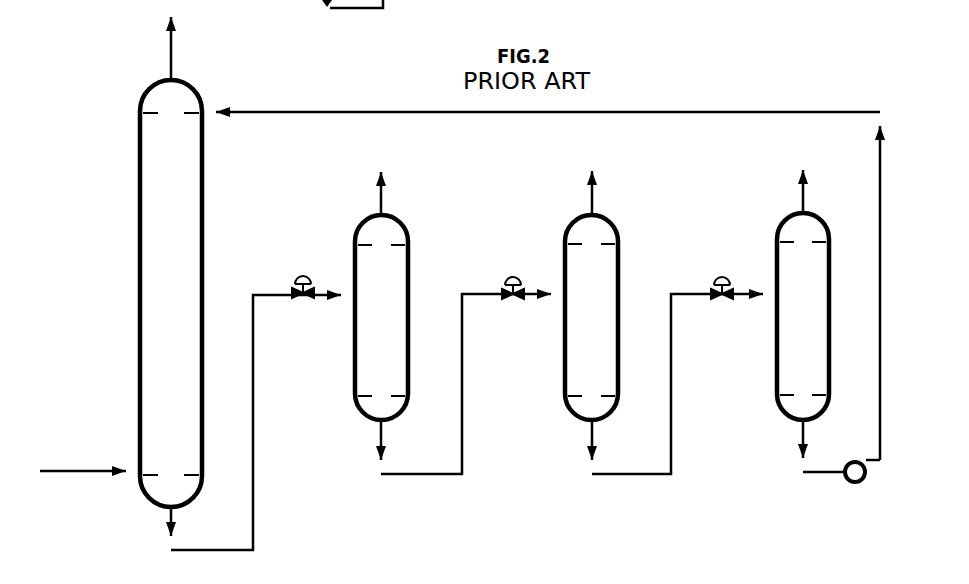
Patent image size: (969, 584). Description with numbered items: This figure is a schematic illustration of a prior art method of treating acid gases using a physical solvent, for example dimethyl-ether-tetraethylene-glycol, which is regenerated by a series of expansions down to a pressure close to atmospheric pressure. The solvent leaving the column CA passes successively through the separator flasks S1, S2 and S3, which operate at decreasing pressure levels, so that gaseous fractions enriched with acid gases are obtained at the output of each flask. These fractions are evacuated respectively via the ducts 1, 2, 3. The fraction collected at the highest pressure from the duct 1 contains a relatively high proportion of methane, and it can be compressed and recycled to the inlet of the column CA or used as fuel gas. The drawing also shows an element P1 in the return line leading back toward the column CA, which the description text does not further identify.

The duct 1 is at (381, 188).
The duct 2 is at (592, 186).
The duct 3 is at (803, 184).
The column CA is at (183, 273).
The separator flask S1 is at (385, 333).
The separator flask S2 is at (599, 333).
The separator flask S3 is at (810, 333).
The pump P1 is at (856, 457).